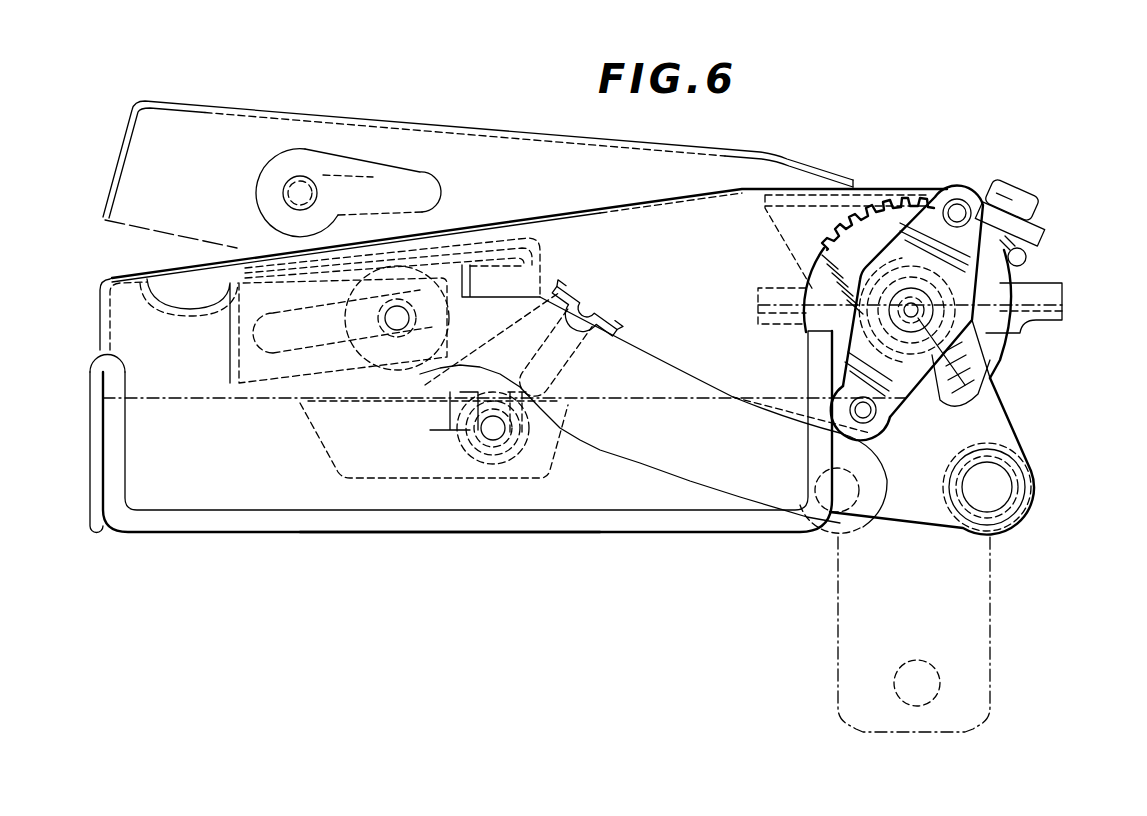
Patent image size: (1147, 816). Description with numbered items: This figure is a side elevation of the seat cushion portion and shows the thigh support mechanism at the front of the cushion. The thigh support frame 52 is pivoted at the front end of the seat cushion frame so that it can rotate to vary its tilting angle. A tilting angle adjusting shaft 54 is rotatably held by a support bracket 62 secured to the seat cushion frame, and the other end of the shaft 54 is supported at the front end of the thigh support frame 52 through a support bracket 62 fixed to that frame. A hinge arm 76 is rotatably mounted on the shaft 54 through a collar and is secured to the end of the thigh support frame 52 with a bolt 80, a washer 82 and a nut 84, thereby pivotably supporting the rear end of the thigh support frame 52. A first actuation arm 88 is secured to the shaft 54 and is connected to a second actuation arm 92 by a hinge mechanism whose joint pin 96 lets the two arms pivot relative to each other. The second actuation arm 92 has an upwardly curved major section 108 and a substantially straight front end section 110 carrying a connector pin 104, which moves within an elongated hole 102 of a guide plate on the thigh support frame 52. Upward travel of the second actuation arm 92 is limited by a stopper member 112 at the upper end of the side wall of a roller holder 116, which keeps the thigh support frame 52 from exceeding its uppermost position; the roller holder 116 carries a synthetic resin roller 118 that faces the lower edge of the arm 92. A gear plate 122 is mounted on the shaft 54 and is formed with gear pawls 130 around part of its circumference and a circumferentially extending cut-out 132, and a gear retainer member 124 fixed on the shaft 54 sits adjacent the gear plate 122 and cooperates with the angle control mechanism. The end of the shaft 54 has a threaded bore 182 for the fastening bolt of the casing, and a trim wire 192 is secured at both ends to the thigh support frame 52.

The thigh support frame 52 is at (464, 133).
The tilting angle adjusting shaft 54 is at (920, 312).
The support bracket 62 is at (250, 278).
The hinge arm 76 is at (1015, 268).
The bolt 80 is at (1008, 195).
The washer 82 is at (1036, 224).
The nut 84 is at (1040, 257).
The first actuation arm 88 is at (980, 400).
The second actuation arm 92 is at (687, 470).
The joint pin 96 is at (995, 490).
The elongated hole 102 is at (393, 190).
The connector pin 104 is at (300, 190).
The upwardly curved major section 108 is at (676, 369).
The substantially straight front end section 110 is at (483, 277).
The stopper member 112 is at (572, 289).
The roller holder 116 is at (562, 400).
The roller 118 is at (481, 455).
The gear plate 122 is at (852, 250).
The gear retainer member 124 is at (957, 190).
The gear pawls 130 is at (870, 214).
The circumferentially extending cut-out 132 is at (870, 433).
The threaded bore 182 is at (985, 378).
The trim wire 192 is at (357, 525).